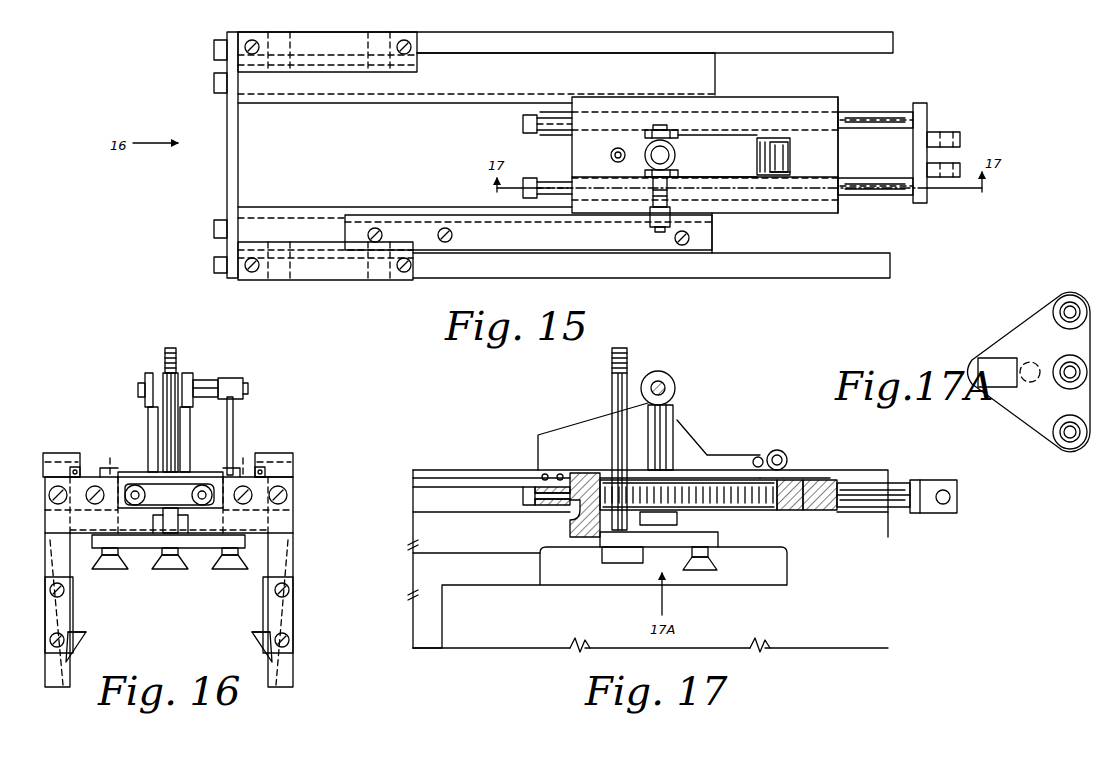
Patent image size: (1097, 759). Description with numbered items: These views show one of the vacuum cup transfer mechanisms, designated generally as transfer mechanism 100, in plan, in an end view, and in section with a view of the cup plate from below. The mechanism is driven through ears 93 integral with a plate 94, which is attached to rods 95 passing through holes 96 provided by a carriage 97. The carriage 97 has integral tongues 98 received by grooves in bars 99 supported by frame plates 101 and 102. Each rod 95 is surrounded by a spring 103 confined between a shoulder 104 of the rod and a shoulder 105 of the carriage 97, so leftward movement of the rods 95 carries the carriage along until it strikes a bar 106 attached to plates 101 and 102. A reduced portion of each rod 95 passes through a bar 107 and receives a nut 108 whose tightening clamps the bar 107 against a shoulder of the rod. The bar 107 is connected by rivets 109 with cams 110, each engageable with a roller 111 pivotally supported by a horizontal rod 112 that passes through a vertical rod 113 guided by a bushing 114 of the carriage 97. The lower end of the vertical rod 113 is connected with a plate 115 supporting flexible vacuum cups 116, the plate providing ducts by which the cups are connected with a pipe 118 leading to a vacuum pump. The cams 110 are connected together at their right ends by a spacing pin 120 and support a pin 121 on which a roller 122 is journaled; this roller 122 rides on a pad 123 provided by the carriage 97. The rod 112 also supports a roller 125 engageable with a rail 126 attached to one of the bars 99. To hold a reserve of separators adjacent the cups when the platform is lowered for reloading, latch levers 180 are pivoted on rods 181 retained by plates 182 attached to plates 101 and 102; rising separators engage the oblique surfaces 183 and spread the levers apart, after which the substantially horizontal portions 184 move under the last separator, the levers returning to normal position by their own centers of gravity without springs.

In FIG. 15, the ears 93 is at (960, 142).
In FIG. 17, the ears 93 is at (957, 480).
In FIG. 15, the plate 94 is at (925, 105).
In FIG. 17, the plate 94 is at (920, 479).
In FIG. 15, the rods 95 is at (880, 128).
In FIG. 17, the rods 95 is at (865, 508).
In FIG. 17, the holes 96 is at (785, 510).
In FIG. 15, the carriage 97 is at (800, 208).
In FIG. 16, the carriage 97 is at (128, 470).
In FIG. 17, the carriage 97 is at (826, 514).
In FIG. 15, the tongues 98 is at (838, 213).
In FIG. 16, the tongues 98 is at (173, 440).
In FIG. 16, the bars 99 is at (50, 492).
In FIG. 15, the transfer mechanism 100 is at (534, 153).
In FIG. 15, the frame plate 101 is at (790, 273).
In FIG. 16, the frame plate 101 is at (293, 565).
In FIG. 15, the frame plate 102 is at (806, 30).
In FIG. 16, the frame plate 102 is at (45, 552).
In FIG. 17, the springs 103 is at (815, 478).
In FIG. 17, the shoulder 104 is at (843, 478).
In FIG. 17, the shoulder 105 is at (594, 472).
In FIG. 15, the bar 106 is at (230, 30).
In FIG. 16, the bar 106 is at (280, 523).
In FIG. 15, the bar 107 is at (553, 110).
In FIG. 16, the bar 107 is at (185, 508).
In FIG. 17, the bar 107 is at (548, 506).
In FIG. 15, the nut 108 is at (530, 175).
In FIG. 16, the nut 108 is at (192, 496).
In FIG. 17, the nut 108 is at (530, 486).
In FIG. 17, the rivets 109 is at (560, 474).
In FIG. 15, the cams 110 is at (594, 175).
In FIG. 16, the cams 110 is at (148, 421).
In FIG. 17, the cams 110 is at (596, 425).
In FIG. 15, the roller 111 is at (680, 134).
In FIG. 16, the roller 111 is at (149, 372).
In FIG. 17, the roller 111 is at (676, 385).
In FIG. 16, the horizontal rod 112 is at (138, 390).
In FIG. 17, the horizontal rod 112 is at (666, 388).
In FIG. 15, the vertical rod 113 is at (676, 154).
In FIG. 16, the vertical rod 113 is at (178, 378).
In FIG. 17, the vertical rod 113 is at (673, 422).
In FIG. 15, the bushing 114 is at (648, 160).
In FIG. 17, the bushing 114 is at (690, 468).
In FIG. 16, the plate 115 is at (203, 548).
In FIG. 17, the plate 115 is at (718, 536).
In FIG. 17A, the plate 115 is at (1020, 325).
In FIG. 16, the flexible vacuum cups 116 is at (122, 565).
In FIG. 17, the flexible vacuum cups 116 is at (716, 570).
In FIG. 17A, the flexible vacuum cups 116 is at (1072, 330).
In FIG. 15, the pipe 118 is at (652, 132).
In FIG. 16, the pipe 118 is at (172, 348).
In FIG. 17, the pipe 118 is at (612, 385).
In FIG. 15, the spacing pin 120 is at (757, 152).
In FIG. 17, the spacing pin 120 is at (758, 457).
In FIG. 15, the pin 121 is at (778, 136).
In FIG. 17, the pin 121 is at (788, 456).
In FIG. 15, the roller 122 is at (790, 153).
In FIG. 17, the roller 122 is at (778, 450).
In FIG. 15, the pad 123 is at (790, 168).
In FIG. 17, the pad 123 is at (790, 480).
In FIG. 15, the roller 125 is at (650, 222).
In FIG. 16, the roller 125 is at (238, 378).
In FIG. 15, the rail 126 is at (522, 222).
In FIG. 16, the rail 126 is at (233, 428).
In FIG. 16, the latch levers 180 is at (50, 610).
In FIG. 16, the rods 181 is at (70, 470).
In FIG. 15, the plates 182 is at (313, 73).
In FIG. 16, the plates 182 is at (72, 453).
In FIG. 16, the oblique surfaces 183 is at (76, 656).
In FIG. 16, the horizontal portions 184 is at (78, 640).